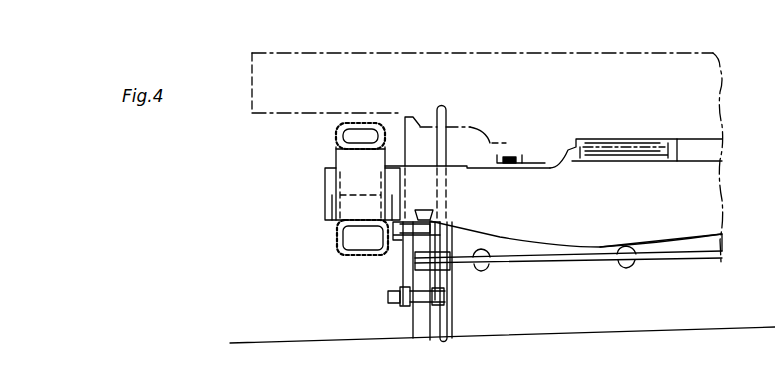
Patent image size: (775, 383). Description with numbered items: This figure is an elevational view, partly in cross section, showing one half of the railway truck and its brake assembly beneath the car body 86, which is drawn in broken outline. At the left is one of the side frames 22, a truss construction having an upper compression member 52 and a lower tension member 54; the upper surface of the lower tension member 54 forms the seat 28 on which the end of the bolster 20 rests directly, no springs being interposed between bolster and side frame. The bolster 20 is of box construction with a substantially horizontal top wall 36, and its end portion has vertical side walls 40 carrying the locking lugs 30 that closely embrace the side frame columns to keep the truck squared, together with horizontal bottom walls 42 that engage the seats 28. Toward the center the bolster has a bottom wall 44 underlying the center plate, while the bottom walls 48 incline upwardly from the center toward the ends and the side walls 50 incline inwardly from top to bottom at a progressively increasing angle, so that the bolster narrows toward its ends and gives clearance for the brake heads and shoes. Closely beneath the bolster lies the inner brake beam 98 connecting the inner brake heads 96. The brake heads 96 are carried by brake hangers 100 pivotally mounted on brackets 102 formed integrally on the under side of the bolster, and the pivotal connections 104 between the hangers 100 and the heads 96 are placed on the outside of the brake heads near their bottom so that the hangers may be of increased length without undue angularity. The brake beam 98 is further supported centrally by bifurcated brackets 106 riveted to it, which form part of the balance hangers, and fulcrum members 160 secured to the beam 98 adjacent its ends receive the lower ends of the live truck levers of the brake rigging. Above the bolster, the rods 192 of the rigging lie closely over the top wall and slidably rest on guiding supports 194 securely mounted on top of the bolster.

The car body 86 is at (383, 60).
The upper compression member 52 is at (355, 122).
The bolster 20 is at (478, 164).
The rods 192 is at (508, 155).
The guiding supports 194 is at (524, 162).
The top wall 36 is at (560, 164).
The side frames 22 is at (334, 151).
The vertical side walls 40 is at (359, 181).
The locking lugs 30 is at (333, 205).
The horizontal bottom walls 42 is at (360, 226).
The seats 28 is at (362, 228).
The lower tension member 54 is at (360, 254).
The inner brake heads 96 is at (427, 243).
The brake hangers 100 is at (412, 268).
The brackets 102 is at (428, 213).
The pivotal connections 104 is at (393, 296).
The side walls 50 is at (553, 169).
The bottom walls 48 is at (525, 234).
The bottom wall 44 is at (645, 245).
The brake beam 98 is at (545, 263).
The fulcrum members 160 is at (485, 272).
The brackets 106 is at (620, 270).